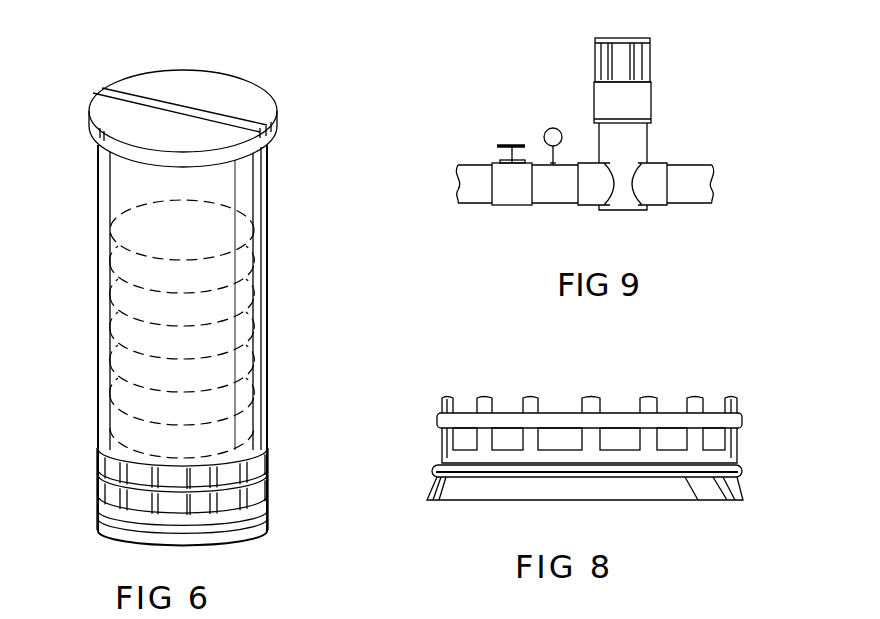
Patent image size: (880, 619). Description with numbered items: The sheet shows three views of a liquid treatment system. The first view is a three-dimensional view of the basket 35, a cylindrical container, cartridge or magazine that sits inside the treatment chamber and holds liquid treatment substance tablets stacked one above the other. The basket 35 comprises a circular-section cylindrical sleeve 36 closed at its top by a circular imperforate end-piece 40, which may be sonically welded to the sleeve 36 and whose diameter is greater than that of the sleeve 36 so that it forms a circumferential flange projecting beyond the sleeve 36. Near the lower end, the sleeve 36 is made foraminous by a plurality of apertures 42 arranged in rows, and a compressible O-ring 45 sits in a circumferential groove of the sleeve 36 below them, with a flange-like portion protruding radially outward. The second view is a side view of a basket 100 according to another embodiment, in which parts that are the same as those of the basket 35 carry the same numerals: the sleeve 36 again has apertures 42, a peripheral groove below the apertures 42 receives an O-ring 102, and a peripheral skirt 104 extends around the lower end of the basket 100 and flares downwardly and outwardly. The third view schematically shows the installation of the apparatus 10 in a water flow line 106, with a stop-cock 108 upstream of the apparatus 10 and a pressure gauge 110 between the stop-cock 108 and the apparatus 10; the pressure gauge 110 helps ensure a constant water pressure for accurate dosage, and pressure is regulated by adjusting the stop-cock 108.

In FIG. 9, the apparatus 10 is at (680, 81).
In FIG. 6, the basket 35 is at (284, 309).
In FIG. 6, the sleeve 36 is at (252, 197).
In FIG. 8, the sleeve 36 is at (442, 443).
In FIG. 6, the end-piece 40 is at (250, 105).
In FIG. 6, the apertures 42 is at (212, 476).
In FIG. 8, the apertures 42 is at (613, 440).
In FIG. 6, the O-ring 45 is at (96, 499).
In FIG. 8, the basket 100 is at (450, 371).
In FIG. 8, the O-ring 102 is at (432, 468).
In FIG. 8, the peripheral skirt 104 is at (515, 485).
In FIG. 9, the water flow line 106 is at (562, 190).
In FIG. 9, the stop-cock 108 is at (510, 197).
In FIG. 9, the pressure gauge 110 is at (553, 128).